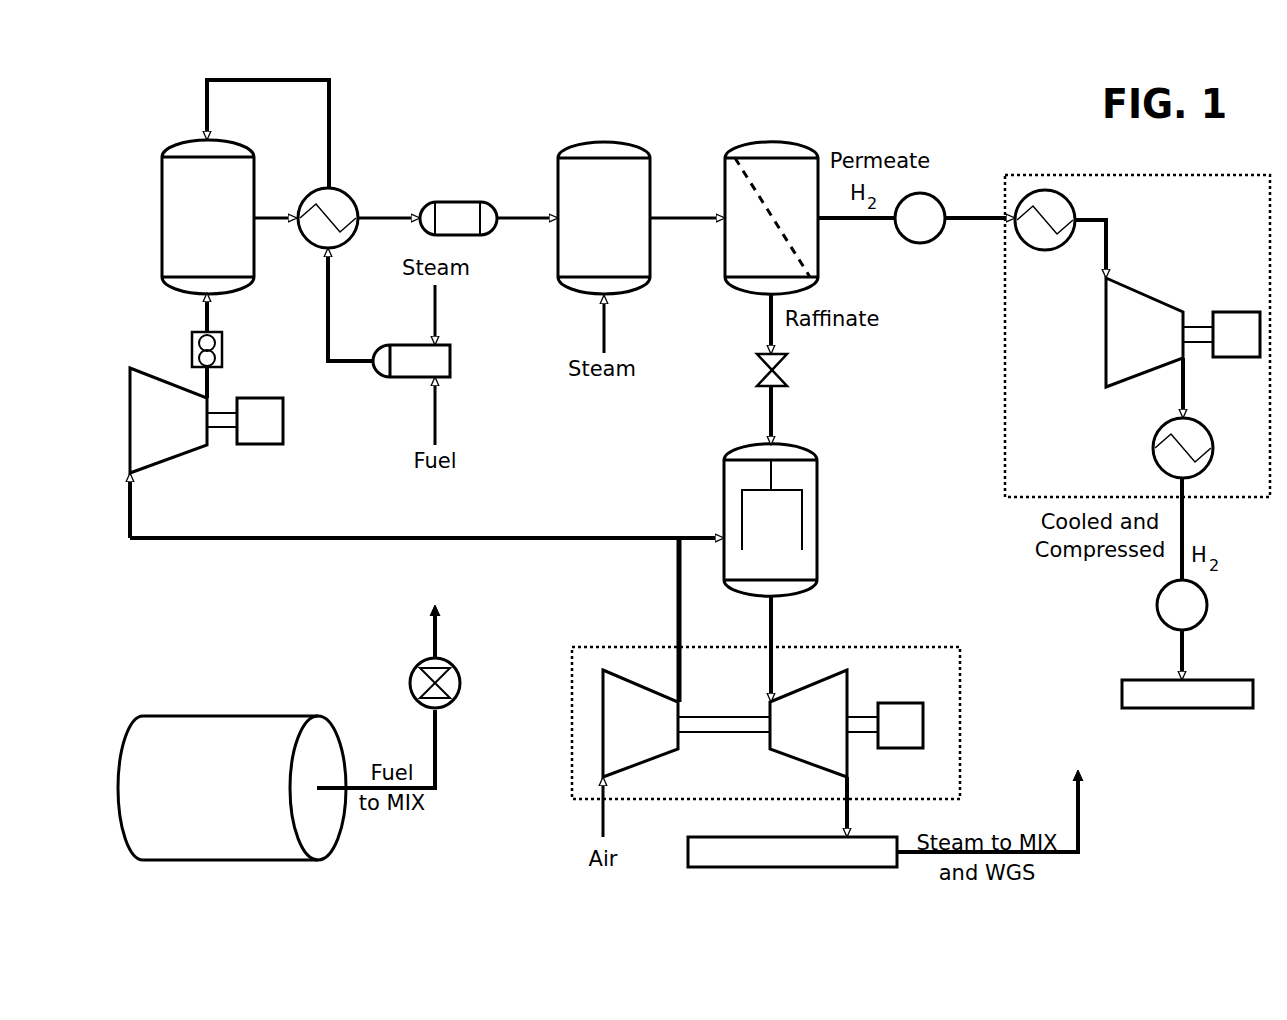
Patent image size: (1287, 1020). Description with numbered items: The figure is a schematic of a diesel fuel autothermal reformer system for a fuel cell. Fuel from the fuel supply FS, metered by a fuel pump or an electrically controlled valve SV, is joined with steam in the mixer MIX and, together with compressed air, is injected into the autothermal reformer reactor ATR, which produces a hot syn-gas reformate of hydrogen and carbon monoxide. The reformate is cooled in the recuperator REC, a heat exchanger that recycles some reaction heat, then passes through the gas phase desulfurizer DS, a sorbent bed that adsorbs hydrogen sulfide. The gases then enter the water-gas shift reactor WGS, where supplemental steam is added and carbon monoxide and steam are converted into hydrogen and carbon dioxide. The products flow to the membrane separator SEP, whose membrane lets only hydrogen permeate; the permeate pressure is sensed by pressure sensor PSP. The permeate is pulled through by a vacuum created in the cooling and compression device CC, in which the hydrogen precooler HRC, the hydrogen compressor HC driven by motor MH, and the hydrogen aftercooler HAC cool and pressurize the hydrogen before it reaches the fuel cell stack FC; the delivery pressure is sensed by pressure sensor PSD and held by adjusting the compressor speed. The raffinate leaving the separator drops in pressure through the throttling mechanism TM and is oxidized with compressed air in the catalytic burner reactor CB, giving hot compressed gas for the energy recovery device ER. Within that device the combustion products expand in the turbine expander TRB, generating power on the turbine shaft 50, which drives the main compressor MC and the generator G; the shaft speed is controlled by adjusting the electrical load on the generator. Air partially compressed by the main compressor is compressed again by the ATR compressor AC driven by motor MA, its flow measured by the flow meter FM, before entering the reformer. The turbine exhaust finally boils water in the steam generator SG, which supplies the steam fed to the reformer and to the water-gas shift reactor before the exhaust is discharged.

The turbine shaft 50 is at (732, 737).
The autothermal reformer reactor ATR is at (208, 217).
The recuperator REC is at (328, 218).
The gas phase desulfurizer DS is at (458, 218).
The water-gas shift reactor WGS is at (604, 218).
The membrane separator SEP is at (771, 218).
The pressure sensor PSP is at (920, 218).
The pressure sensor PSD is at (1182, 605).
The hydrogen precooler HRC is at (1045, 220).
The hydrogen compressor HC is at (1144, 332).
The motor MH is at (1221, 334).
The hydrogen aftercooler HAC is at (1183, 448).
The cooling and compression device CC is at (1137, 336).
The fuel cell stack FC is at (1187, 694).
The throttling mechanism TM is at (787, 368).
The catalytic burner reactor CB is at (770, 520).
The mixer MIX is at (411, 361).
The flow meter FM is at (226, 350).
The ATR compressor AC is at (168, 420).
The motor MA is at (245, 421).
The main compressor MC is at (640, 723).
The turbine expander TRB is at (808, 723).
The generator G is at (885, 725).
The energy recovery device ER is at (766, 723).
The steam generator SG is at (792, 852).
The fuel supply FS is at (232, 788).
The electrically controlled valve SV is at (405, 667).